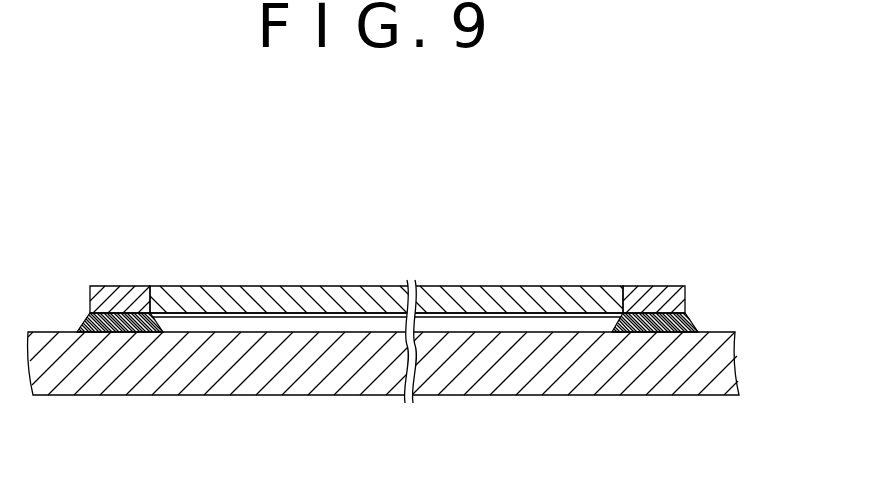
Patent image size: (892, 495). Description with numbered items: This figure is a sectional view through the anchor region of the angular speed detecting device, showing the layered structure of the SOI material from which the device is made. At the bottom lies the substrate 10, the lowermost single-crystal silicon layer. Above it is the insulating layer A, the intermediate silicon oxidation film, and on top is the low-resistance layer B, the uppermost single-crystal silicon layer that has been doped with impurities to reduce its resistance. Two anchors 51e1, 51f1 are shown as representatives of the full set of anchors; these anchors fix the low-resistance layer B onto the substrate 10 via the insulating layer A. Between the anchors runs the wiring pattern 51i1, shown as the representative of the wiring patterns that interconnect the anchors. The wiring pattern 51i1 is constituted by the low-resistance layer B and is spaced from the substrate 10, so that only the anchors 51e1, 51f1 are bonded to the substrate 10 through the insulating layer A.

The substrate 10 is at (735, 350).
The wiring pattern 51i1 is at (262, 286).
The low-resistance layer (electric conductor) B is at (686, 288).
The anchor 51e1 is at (118, 286).
The anchor 51f1 is at (651, 286).
The insulating layer A is at (694, 327).